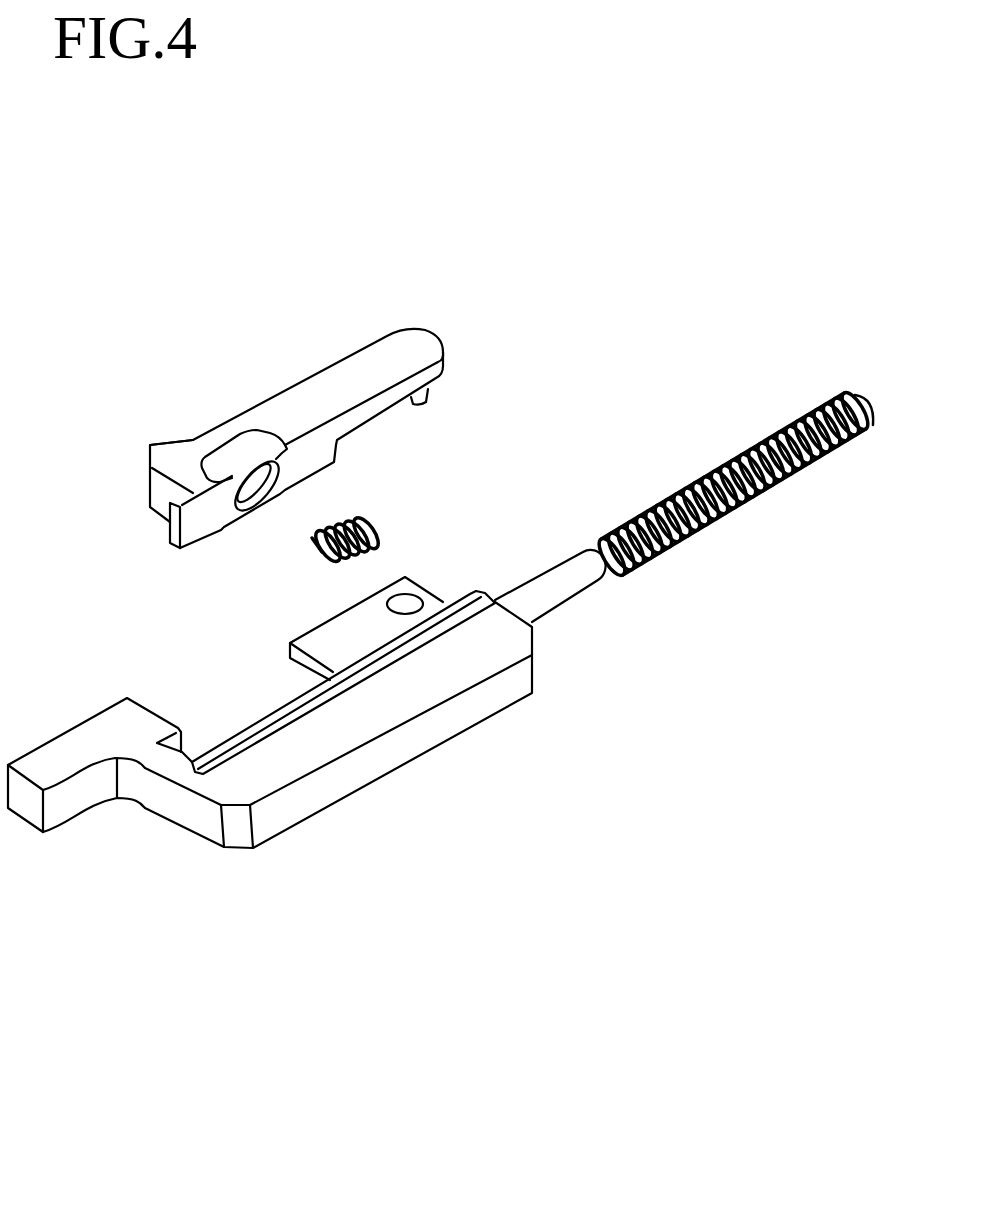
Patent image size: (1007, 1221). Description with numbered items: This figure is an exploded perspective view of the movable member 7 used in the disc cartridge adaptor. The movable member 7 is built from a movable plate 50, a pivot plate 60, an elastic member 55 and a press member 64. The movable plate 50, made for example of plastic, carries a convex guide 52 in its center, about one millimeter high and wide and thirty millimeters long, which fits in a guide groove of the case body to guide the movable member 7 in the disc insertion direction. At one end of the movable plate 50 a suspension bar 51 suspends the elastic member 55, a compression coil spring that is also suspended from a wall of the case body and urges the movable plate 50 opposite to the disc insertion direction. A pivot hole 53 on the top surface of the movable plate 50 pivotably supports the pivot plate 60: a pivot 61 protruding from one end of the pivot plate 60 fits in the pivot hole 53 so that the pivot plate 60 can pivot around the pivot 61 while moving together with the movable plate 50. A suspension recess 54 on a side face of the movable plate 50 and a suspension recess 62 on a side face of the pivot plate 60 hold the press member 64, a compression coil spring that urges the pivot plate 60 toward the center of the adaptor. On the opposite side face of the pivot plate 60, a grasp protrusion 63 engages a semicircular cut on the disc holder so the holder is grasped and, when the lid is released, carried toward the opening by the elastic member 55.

The movable member 7 is at (160, 845).
The movable plate 50 is at (300, 818).
The suspension bar 51 is at (568, 602).
The convex guide 52 is at (340, 693).
The pivot hole 53 is at (412, 612).
The suspension recess 54 is at (262, 714).
The elastic member 55 is at (790, 424).
The pivot plate 60 is at (350, 352).
The pivot 61 is at (418, 402).
The suspension recess 62 is at (272, 503).
The grasp protrusion 63 is at (153, 446).
The press member 64 is at (360, 512).